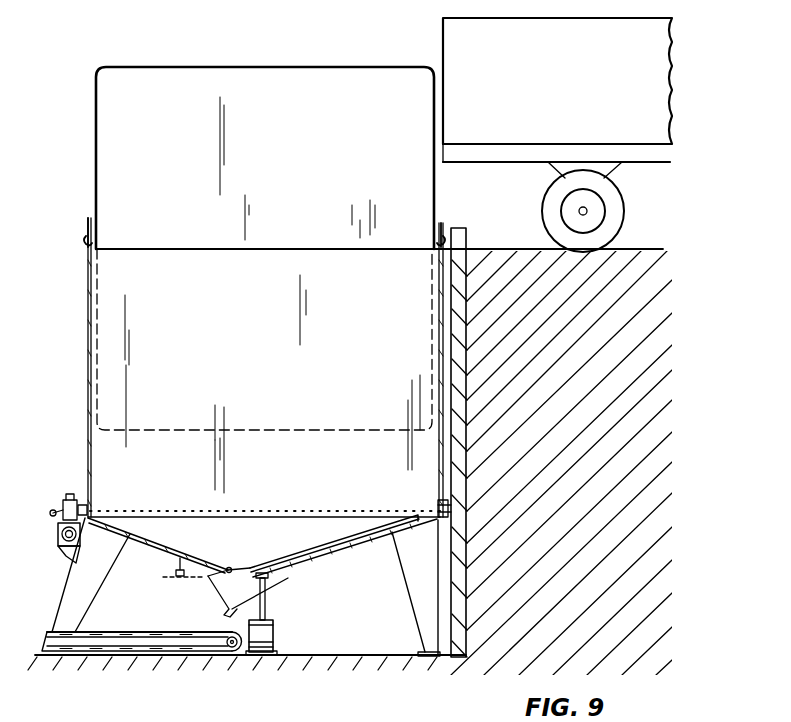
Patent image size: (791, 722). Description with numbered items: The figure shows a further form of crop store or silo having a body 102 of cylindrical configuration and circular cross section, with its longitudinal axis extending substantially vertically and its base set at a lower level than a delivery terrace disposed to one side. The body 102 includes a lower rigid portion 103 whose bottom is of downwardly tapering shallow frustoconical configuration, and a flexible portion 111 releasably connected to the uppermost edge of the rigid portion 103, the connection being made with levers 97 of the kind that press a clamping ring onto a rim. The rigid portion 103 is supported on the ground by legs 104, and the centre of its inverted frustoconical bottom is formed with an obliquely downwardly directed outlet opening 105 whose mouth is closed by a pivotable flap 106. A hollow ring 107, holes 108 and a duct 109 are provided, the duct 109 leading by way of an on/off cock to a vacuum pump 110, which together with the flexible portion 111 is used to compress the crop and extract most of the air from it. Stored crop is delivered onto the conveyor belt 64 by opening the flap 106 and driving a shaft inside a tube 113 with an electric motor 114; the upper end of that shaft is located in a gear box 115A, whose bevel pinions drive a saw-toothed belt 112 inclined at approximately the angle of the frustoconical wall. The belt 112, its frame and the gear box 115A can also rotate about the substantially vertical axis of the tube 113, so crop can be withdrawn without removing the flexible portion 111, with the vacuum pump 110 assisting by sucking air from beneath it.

The conveyor belt 64 is at (165, 630).
The lever 97 is at (88, 218).
The body 102 is at (78, 321).
The lower rigid portion 103 is at (88, 400).
The legs 104 is at (97, 580).
The outlet opening 105 is at (240, 548).
The pivotable flap 106 is at (216, 602).
The hollow ring 107 is at (438, 500).
The holes 108 is at (275, 506).
The duct 109 is at (76, 483).
The vacuum pump 110 is at (58, 541).
The flexible portion 111 is at (303, 52).
The saw-toothed belt 112 is at (323, 548).
The tube 113 is at (266, 603).
The electric motor 114 is at (289, 637).
The gear box 115A is at (268, 584).